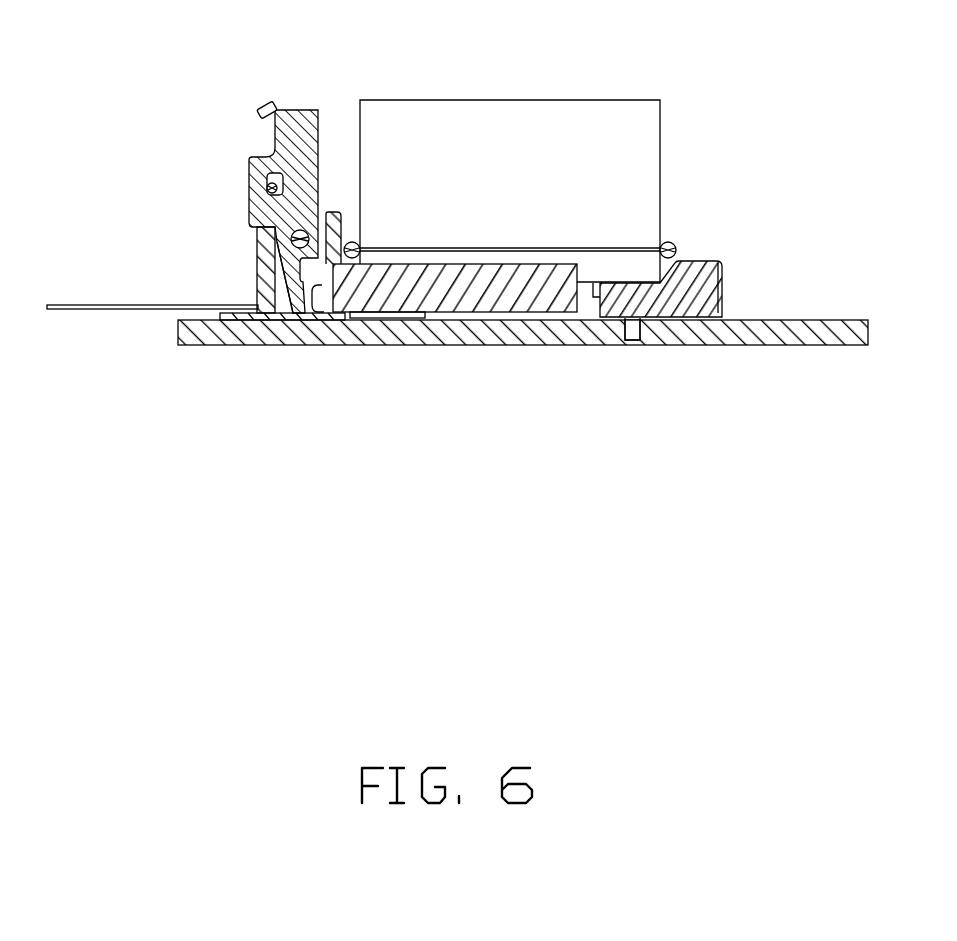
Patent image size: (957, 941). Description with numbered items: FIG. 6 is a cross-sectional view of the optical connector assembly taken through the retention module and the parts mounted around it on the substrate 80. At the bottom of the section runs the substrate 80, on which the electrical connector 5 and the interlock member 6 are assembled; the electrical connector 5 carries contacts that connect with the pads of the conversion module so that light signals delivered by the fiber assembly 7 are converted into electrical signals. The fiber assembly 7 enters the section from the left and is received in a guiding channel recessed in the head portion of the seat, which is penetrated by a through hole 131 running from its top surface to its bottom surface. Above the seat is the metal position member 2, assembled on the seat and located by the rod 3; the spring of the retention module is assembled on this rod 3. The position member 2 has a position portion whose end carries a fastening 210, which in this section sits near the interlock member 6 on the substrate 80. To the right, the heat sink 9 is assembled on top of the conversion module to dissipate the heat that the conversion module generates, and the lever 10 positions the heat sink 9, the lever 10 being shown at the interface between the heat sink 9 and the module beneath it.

The position member 2 is at (304, 126).
The rod 3 is at (275, 248).
The electrical connector 5 is at (697, 277).
The interlock member 6 is at (246, 320).
The fiber assembly 7 is at (138, 305).
The heat sink 9 is at (508, 116).
The lever 10 is at (672, 242).
The substrate 80 is at (760, 331).
The through hole 131 is at (285, 298).
The fastening 210 is at (336, 312).